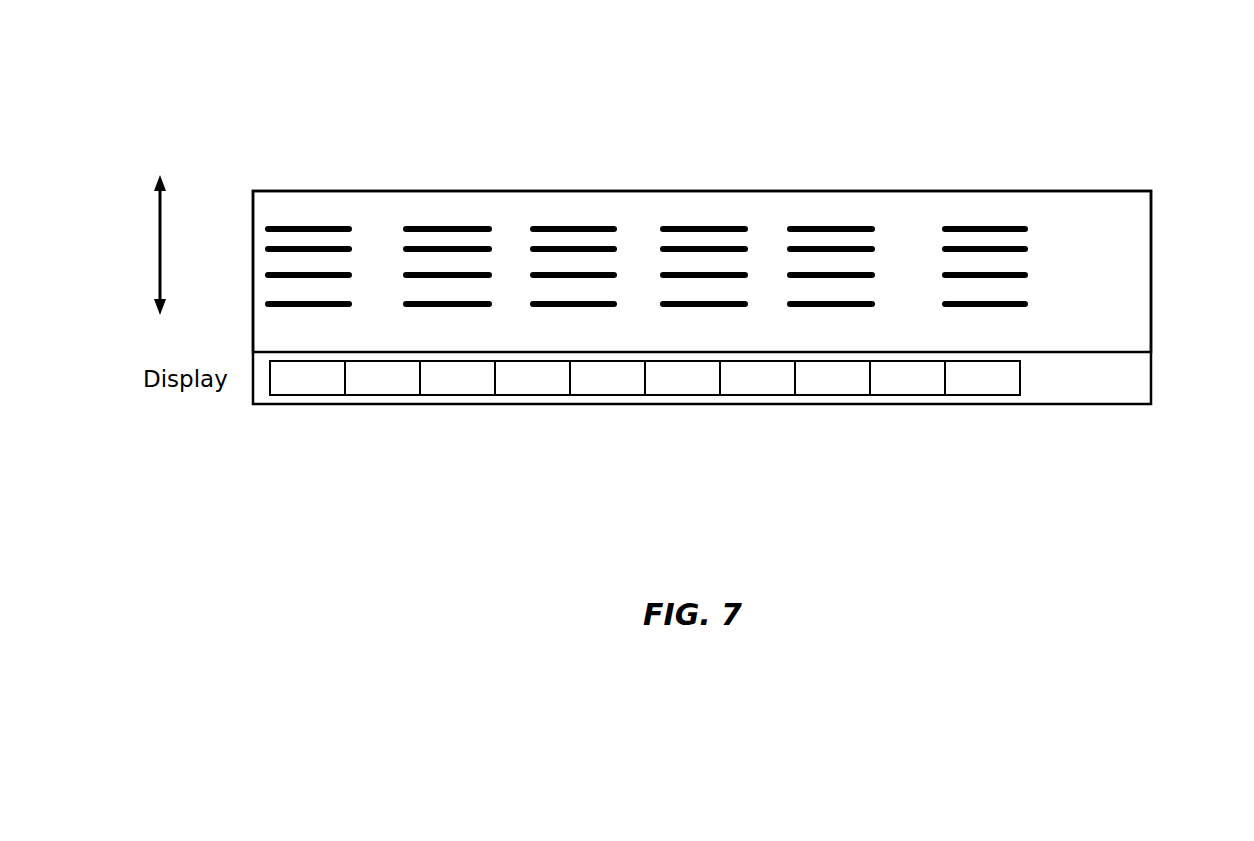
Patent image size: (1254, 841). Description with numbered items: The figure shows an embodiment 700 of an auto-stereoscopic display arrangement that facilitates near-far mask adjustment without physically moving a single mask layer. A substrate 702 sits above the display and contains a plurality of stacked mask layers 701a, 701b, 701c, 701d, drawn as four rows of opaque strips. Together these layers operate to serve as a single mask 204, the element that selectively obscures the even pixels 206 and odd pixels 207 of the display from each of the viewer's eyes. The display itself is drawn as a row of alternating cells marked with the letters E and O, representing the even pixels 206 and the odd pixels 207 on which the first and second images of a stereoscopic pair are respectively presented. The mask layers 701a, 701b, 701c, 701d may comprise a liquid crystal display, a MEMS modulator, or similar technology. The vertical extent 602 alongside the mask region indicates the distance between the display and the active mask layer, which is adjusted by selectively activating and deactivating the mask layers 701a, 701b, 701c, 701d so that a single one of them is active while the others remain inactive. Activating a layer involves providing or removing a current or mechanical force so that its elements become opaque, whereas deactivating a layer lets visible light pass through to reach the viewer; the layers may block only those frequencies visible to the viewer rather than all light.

The display system with mask 700 is at (702, 206).
The mask 204 is at (290, 191).
The substrate 702 is at (877, 200).
The mask layer 701a is at (1028, 229).
The mask layer 701b is at (1028, 249).
The mask layer 701c is at (1028, 275).
The mask layer 701d is at (1028, 304).
The mask distance / height 602 is at (160, 242).
The even pixels 206 is at (308, 396).
The odd pixels 207 is at (383, 396).